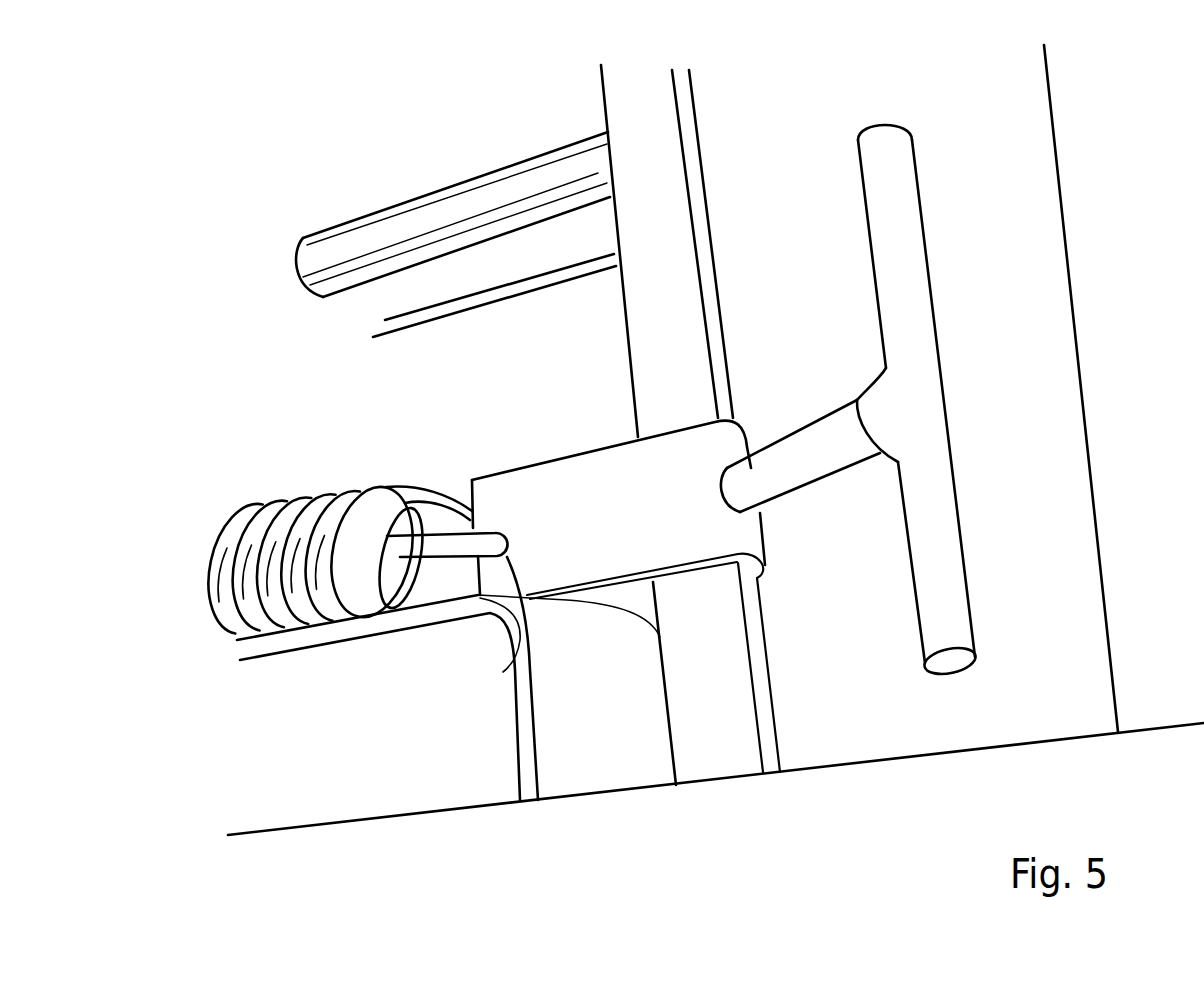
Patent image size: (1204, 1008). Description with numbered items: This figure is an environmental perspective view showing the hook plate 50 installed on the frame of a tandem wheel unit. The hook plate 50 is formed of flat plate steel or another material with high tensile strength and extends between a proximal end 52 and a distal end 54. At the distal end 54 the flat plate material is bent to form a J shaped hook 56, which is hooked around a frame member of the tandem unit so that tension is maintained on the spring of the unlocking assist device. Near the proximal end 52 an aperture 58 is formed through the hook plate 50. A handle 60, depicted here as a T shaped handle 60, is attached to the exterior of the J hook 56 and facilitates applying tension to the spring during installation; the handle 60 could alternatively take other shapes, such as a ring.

The hook plate 50 is at (602, 380).
The proximal end 52 is at (472, 498).
The distal end 54 is at (802, 442).
The J shaped hook 56 is at (757, 567).
The aperture 58 is at (513, 660).
The handle 60 is at (930, 423).